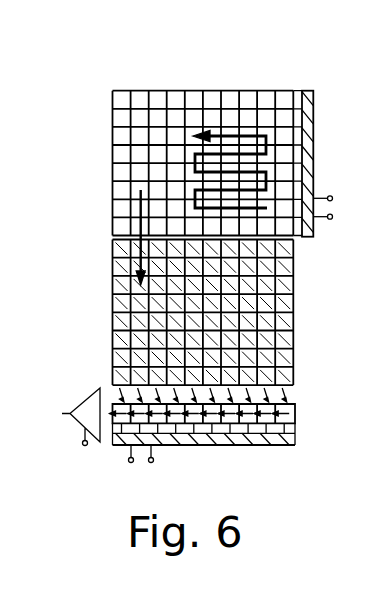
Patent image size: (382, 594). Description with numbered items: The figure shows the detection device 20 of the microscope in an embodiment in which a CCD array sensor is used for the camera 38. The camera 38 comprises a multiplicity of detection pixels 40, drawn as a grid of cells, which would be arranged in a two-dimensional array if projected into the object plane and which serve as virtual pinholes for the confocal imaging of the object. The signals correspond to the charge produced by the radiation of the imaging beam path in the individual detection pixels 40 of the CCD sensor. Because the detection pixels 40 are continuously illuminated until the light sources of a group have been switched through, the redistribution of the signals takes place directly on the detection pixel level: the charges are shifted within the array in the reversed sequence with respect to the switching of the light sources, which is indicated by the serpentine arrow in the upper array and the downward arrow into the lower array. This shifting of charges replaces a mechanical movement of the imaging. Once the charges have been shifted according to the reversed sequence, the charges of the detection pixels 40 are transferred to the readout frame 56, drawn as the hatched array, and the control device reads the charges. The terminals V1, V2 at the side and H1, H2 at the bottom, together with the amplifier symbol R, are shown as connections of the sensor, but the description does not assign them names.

The detection device 20 is at (101, 173).
The camera 38 is at (138, 90).
The detection pixels 40 is at (284, 99).
The readout frame 56 is at (287, 301).
The vertical clock terminal V1 is at (340, 218).
The vertical clock terminal V2 is at (340, 199).
The horizontal clock terminal H1 is at (124, 473).
The horizontal clock terminal H2 is at (159, 473).
The readout amplifier R is at (81, 426).